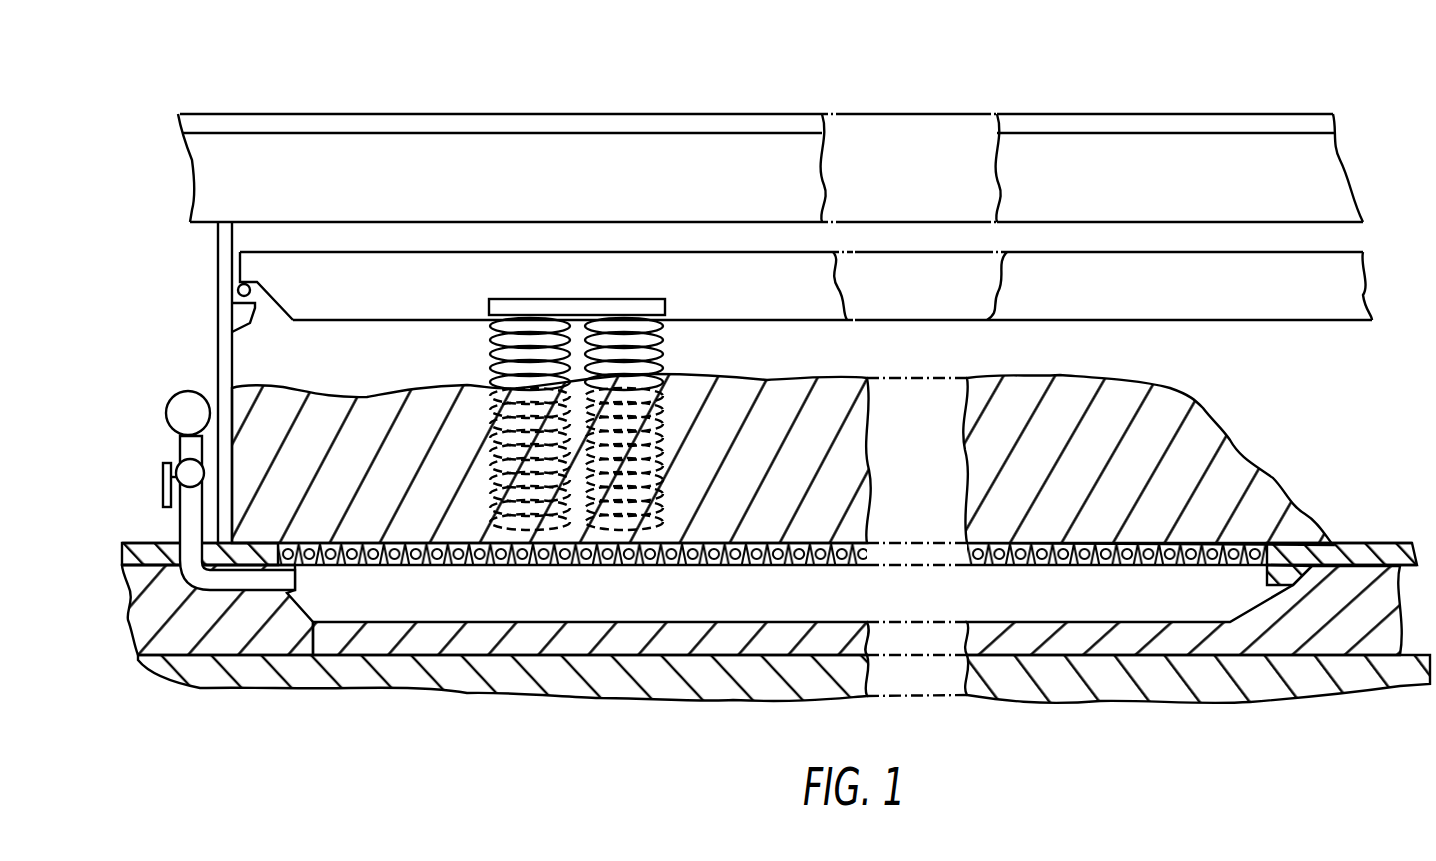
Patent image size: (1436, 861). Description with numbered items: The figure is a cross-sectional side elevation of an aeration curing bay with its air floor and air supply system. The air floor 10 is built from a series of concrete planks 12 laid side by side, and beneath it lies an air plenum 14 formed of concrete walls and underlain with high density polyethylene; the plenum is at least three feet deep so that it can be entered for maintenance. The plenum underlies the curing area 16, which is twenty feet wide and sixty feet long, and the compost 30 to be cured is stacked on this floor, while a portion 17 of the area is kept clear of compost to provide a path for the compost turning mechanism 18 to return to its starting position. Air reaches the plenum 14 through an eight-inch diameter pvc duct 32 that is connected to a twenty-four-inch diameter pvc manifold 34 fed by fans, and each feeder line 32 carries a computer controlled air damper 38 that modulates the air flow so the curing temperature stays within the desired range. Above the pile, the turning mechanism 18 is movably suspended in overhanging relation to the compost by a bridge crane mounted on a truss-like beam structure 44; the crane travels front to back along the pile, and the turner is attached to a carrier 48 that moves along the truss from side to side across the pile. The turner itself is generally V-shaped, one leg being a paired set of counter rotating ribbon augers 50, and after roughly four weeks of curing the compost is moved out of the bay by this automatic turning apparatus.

The air floor 10 is at (680, 571).
The planks 12 is at (353, 567).
The air plenum 14 is at (1200, 583).
The curing area 16 is at (764, 86).
The portion of the curing area 17 is at (1353, 531).
The compost turning mechanism 18 is at (674, 361).
The compost 30 is at (1212, 422).
The pvc ducts 32 is at (180, 516).
The pvc manifold 34 is at (180, 400).
The air damper 38 is at (180, 462).
The beam structure 44 is at (425, 265).
The carrier 48 is at (563, 299).
The ribbon augers 50 is at (600, 365).